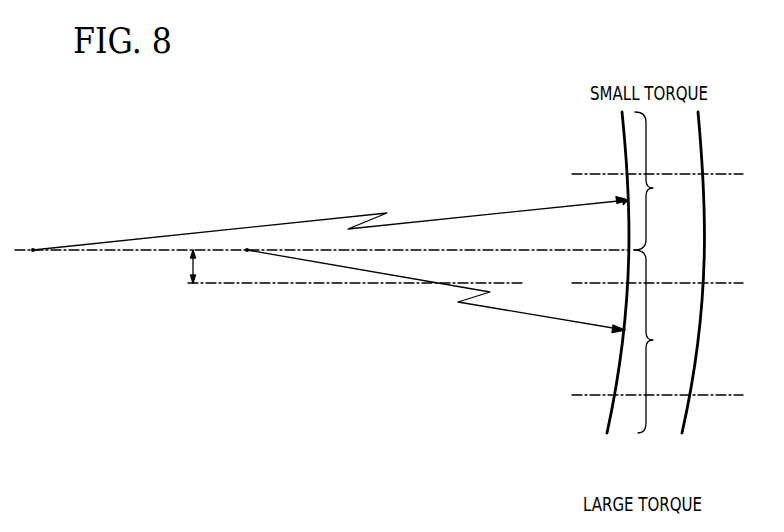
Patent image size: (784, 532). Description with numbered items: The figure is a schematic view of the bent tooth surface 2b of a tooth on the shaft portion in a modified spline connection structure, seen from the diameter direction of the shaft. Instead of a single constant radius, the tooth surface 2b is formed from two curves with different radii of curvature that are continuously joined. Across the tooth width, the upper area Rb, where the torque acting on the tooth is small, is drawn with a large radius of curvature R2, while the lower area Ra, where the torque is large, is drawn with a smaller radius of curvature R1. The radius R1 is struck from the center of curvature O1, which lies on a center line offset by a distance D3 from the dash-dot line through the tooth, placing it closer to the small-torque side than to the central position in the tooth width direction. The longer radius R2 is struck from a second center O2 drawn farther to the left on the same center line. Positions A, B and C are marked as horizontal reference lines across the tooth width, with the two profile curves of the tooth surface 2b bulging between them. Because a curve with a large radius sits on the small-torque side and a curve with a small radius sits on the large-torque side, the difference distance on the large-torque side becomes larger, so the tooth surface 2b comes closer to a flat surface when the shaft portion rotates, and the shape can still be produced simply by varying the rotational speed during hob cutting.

The tooth surface 2b is at (607, 435).
The center of curvature O1 is at (247, 249).
The center of radius R2 O2 is at (33, 249).
The radius of curvature R1 is at (625, 330).
The radius of curvature R2 is at (33, 250).
The distance D3 is at (346, 266).
The position A is at (648, 174).
The position B is at (648, 284).
The position C is at (648, 395).
The area in which the torque is large Ra is at (658, 341).
The area in which the torque is small Rb is at (658, 181).